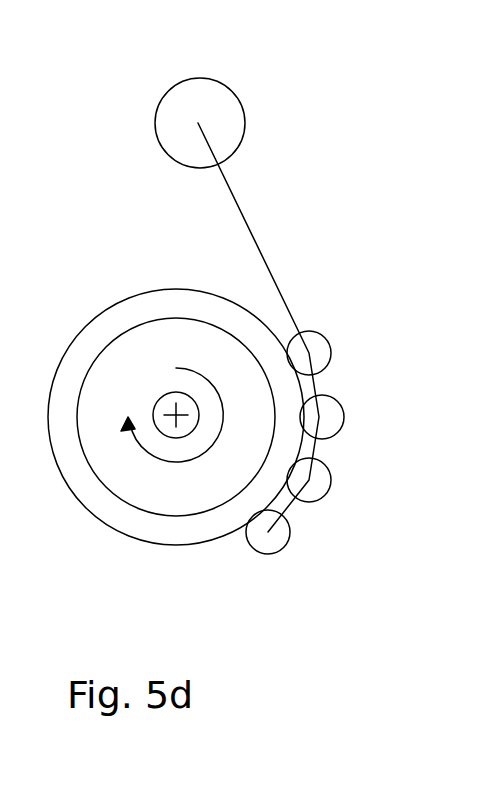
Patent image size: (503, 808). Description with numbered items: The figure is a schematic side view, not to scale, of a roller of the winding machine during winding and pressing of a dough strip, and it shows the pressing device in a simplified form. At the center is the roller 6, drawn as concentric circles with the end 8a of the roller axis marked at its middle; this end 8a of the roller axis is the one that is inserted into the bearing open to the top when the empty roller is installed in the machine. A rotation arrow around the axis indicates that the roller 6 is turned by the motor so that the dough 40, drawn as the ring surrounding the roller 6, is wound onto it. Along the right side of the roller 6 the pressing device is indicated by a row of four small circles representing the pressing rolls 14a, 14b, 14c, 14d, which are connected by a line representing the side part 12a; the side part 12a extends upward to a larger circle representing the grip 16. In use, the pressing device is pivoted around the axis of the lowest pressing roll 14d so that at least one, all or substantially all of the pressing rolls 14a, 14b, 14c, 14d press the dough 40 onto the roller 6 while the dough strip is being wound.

The grip 16 is at (198, 95).
The side part 12a is at (251, 230).
The dough 40 is at (102, 332).
The roller 6 is at (122, 470).
The end of the roller axis 8a is at (172, 406).
The pressing roll 14a is at (315, 348).
The pressing roll 14b is at (331, 418).
The pressing roll 14c is at (315, 490).
The lowest pressing roll 14d is at (268, 545).